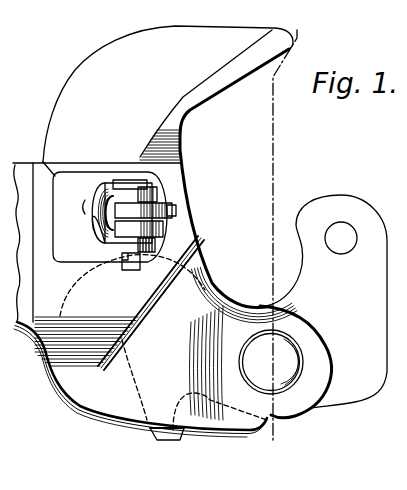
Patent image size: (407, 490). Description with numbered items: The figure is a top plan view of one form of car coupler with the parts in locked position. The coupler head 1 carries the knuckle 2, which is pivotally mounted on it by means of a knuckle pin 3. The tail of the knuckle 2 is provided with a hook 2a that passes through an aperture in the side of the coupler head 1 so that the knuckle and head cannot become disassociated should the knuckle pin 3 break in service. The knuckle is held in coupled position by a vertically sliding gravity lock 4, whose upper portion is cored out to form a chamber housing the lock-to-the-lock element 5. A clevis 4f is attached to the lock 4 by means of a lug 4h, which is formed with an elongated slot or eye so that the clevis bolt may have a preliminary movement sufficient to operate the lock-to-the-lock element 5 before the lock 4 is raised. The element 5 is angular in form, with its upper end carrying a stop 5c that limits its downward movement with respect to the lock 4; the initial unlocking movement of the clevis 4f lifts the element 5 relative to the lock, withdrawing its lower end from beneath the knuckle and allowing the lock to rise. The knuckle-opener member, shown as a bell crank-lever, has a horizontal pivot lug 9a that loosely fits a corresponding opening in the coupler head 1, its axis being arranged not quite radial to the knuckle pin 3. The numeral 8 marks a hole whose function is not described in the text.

The coupler head 1 is at (80, 68).
The knuckle 2 is at (359, 396).
The hook 2a is at (167, 433).
The knuckle pin 3 is at (284, 388).
The gravity lock 4 is at (43, 162).
The clevis 4f is at (155, 188).
The lug 4h is at (163, 228).
The lock-to-the-lock element 5 is at (172, 206).
The stop 5c is at (87, 205).
The hole 8 is at (361, 225).
The pivot lug 9a is at (154, 316).